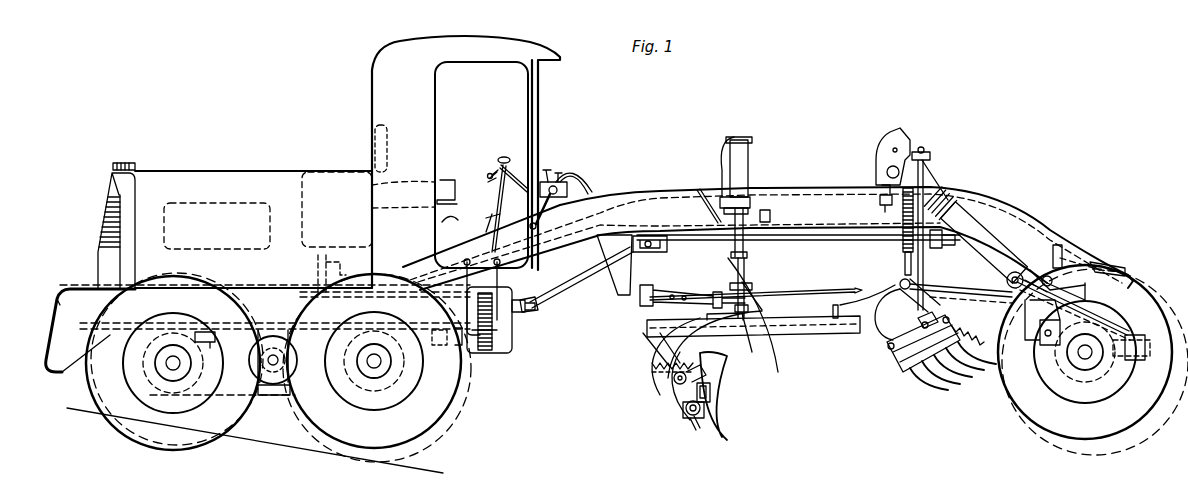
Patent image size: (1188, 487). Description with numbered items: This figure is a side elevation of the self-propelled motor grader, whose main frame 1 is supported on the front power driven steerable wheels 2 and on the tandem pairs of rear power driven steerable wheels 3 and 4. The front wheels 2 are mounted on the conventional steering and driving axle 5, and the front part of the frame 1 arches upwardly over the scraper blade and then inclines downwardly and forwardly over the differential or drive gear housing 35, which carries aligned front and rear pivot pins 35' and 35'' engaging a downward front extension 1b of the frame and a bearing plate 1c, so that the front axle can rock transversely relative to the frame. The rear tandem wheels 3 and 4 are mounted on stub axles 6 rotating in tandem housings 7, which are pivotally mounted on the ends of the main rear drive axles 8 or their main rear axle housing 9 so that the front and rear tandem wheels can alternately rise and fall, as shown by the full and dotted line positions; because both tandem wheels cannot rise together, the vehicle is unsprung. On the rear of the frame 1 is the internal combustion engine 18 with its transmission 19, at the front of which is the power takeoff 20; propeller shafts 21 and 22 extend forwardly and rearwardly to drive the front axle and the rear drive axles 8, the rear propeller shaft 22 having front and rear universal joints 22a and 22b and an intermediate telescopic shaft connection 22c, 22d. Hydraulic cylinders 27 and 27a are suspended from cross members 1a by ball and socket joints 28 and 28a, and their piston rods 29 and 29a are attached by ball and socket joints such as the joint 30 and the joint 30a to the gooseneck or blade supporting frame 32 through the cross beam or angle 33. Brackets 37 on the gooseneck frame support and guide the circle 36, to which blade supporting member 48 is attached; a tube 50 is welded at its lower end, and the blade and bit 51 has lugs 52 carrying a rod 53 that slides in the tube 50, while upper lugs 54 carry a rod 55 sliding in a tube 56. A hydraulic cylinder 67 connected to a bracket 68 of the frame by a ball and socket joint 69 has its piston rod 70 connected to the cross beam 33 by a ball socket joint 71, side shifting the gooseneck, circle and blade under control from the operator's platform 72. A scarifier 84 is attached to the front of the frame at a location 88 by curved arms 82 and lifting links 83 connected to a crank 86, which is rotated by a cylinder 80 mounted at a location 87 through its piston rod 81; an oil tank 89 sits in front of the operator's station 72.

The main frame 1 is at (840, 200).
The cross members 1a is at (764, 213).
The downward front extension 1b is at (1152, 300).
The bearing plate 1c is at (1062, 266).
The front power driven steerable wheels 2 is at (1034, 411).
The front tandem rear wheel 3 is at (396, 447).
The rear tandem rear wheel 4 is at (190, 430).
The front steering and driving axle 5 is at (1090, 356).
The stub axles 6 is at (177, 367).
The tandem housings 7 is at (377, 368).
The main rear drive axles 8 is at (270, 398).
The main rear axle housing 9 is at (280, 398).
The internal combustion engine 18 is at (196, 212).
The transmission 19 is at (418, 297).
The power takeoff 20 is at (493, 345).
The front propeller shaft 21 is at (845, 247).
The rear propeller shaft 22 is at (489, 329).
The front universal joint 22a is at (480, 352).
The rear universal joint 22b is at (320, 290).
The telescopic shaft connection 22c is at (305, 385).
The telescopic shaft connection 22d is at (328, 356).
The hydraulic cylinder 27 is at (733, 197).
The hydraulic cylinder 27a is at (739, 232).
The ball and socket joint 28 is at (738, 205).
The ball and socket joint 28a is at (739, 255).
The piston rod 29 is at (742, 284).
The piston rod 29a is at (752, 296).
The ball and socket joint 30 is at (741, 361).
The circle support arm 30a is at (681, 386).
The gooseneck or blade supporting frame 32 is at (786, 294).
The cross beam or angle 33 is at (745, 285).
The differential or drive gear housing 35 is at (1058, 379).
The front pivot pin 35' is at (1137, 359).
The rear pivot pin 35'' is at (982, 361).
The circle 36 is at (645, 322).
The brackets 37 is at (864, 293).
The blade supporting member 48 is at (680, 350).
The tube 50 is at (684, 414).
The blade and bit 51 is at (718, 405).
The lugs 52 is at (695, 425).
The rod 53 is at (700, 395).
The lugs 54 is at (697, 392).
The rod 55 is at (673, 378).
The tube 56 is at (690, 380).
The hydraulic cylinder 67 is at (665, 294).
The bracket 68 is at (605, 252).
The ball and socket joint 69 is at (617, 294).
The piston rod 70 is at (712, 298).
The ball socket joint 71 is at (756, 352).
The operator's platform 72 is at (469, 146).
The cylinder 80 is at (975, 215).
The piston rod 81 is at (932, 195).
The curved arms 82 is at (990, 280).
The lifting links 83 is at (900, 263).
The scarifier 84 is at (903, 375).
The crank 86 is at (885, 158).
The convenient location 87 is at (1040, 262).
The convenient location 88 is at (1106, 266).
The oil tank 89 is at (558, 181).